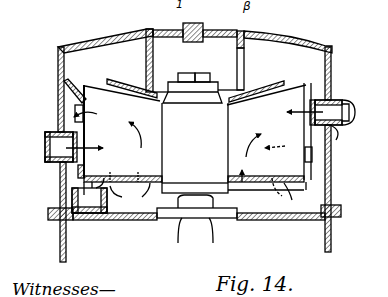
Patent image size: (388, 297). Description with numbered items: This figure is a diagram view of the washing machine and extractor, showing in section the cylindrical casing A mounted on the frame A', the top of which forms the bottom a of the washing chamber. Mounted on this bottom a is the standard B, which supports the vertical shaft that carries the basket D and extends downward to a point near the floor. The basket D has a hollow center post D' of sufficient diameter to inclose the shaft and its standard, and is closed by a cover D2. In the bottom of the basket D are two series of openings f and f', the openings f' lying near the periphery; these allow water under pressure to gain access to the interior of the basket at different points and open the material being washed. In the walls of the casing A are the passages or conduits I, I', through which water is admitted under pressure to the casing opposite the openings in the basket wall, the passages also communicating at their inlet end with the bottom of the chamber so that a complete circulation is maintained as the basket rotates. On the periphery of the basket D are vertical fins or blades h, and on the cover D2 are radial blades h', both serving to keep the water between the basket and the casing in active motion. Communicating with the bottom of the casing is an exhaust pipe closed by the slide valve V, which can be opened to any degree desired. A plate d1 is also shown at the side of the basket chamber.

The cylindrical casing A is at (200, 137).
The frame A' is at (66, 212).
The passage I is at (321, 127).
The passage I' is at (71, 153).
The vertical fins or blades h is at (80, 91).
The radial blades h' is at (266, 85).
The cover D2 is at (140, 93).
The basket D is at (271, 131).
The hollow center post D' is at (195, 133).
The chamber wall plate d1 is at (307, 188).
The openings f is at (194, 176).
The openings f' is at (194, 177).
The valve V is at (95, 215).
The standard B is at (200, 205).
The bottom a is at (199, 224).